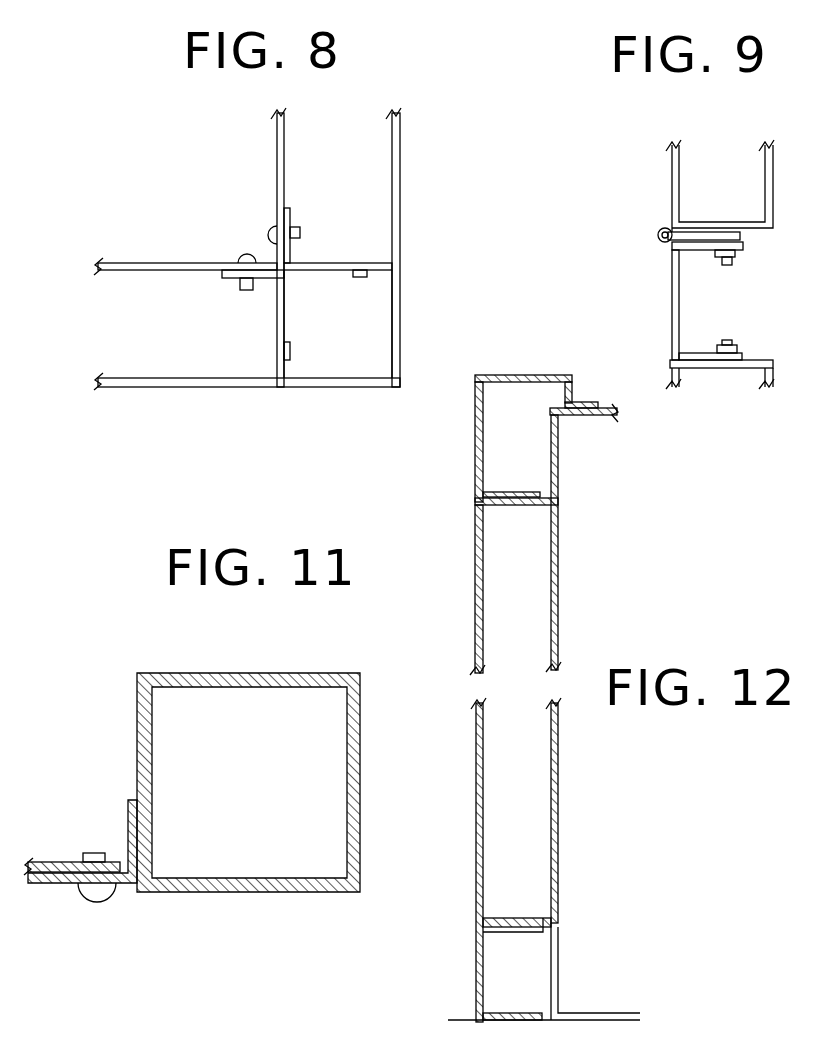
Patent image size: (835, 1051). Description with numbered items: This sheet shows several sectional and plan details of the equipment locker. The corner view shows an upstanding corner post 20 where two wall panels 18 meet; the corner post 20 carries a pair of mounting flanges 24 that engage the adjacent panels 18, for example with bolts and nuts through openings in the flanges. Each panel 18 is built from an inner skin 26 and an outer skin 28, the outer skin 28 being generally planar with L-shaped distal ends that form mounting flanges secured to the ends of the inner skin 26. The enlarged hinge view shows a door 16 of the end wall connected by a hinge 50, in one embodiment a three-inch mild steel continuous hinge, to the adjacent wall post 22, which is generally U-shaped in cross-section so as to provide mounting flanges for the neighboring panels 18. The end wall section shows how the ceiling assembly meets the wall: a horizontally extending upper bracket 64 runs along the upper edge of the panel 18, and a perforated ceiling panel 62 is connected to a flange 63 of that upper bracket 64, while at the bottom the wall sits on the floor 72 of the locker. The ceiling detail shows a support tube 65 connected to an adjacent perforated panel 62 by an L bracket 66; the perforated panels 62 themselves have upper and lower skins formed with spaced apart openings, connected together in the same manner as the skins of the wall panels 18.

In FIG. 9, the door 16 is at (772, 180).
In FIG. 9, the panel 18 is at (722, 368).
In FIG. 12, the panel 18 is at (468, 605).
In FIG. 8, the corner post 20 is at (405, 356).
In FIG. 9, the wall post 22 is at (679, 301).
In FIG. 8, the mounting flange 24 is at (365, 278).
In FIG. 8, the inner skin 26 is at (277, 157).
In FIG. 12, the inner skin 26 is at (558, 792).
In FIG. 8, the outer skin 28 is at (400, 180).
In FIG. 12, the outer skin 28 is at (480, 835).
In FIG. 9, the hinge 50 is at (660, 232).
In FIG. 12, the perforated panel 62 is at (588, 420).
In FIG. 11, the perforated panel 62 is at (62, 862).
In FIG. 12, the flange 63 is at (582, 400).
In FIG. 12, the upper bracket 64 is at (468, 463).
In FIG. 11, the support tube 65 is at (223, 682).
In FIG. 11, the L bracket 66 is at (137, 830).
In FIG. 12, the floor 72 is at (625, 1019).